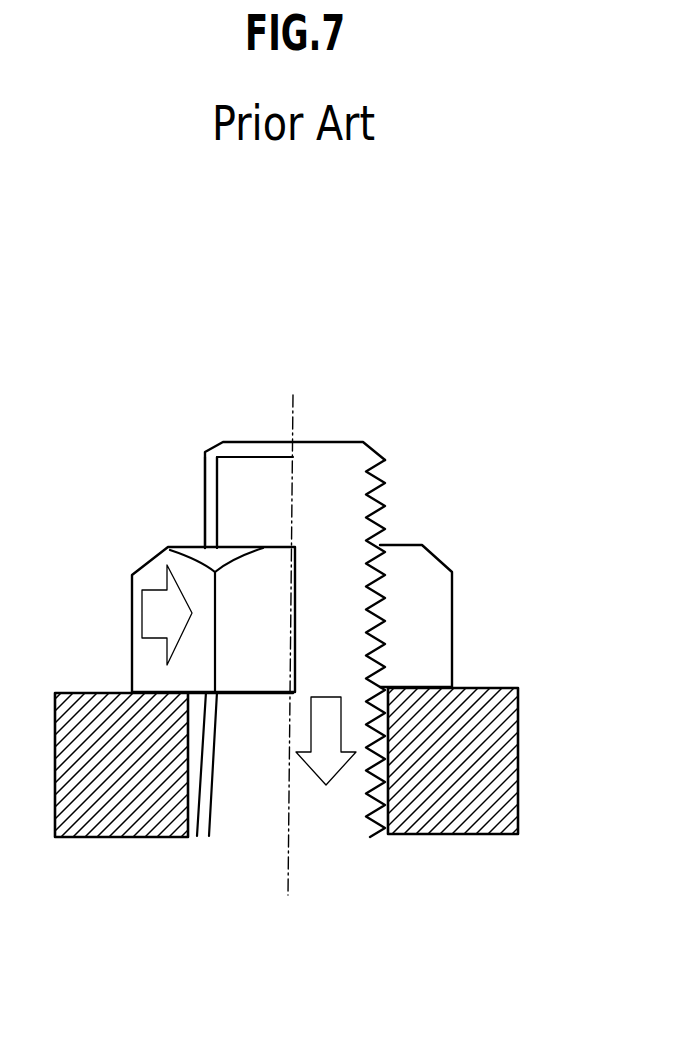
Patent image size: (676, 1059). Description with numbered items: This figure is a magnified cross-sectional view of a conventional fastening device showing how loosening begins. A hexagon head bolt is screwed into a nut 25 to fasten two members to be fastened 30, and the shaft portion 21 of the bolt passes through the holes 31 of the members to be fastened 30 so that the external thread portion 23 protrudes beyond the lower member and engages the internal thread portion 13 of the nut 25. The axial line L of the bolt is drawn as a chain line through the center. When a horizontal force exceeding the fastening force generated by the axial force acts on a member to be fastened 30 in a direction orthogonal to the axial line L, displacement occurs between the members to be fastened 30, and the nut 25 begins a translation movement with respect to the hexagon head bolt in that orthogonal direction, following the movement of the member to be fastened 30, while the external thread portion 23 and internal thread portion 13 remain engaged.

The axial line L is at (296, 426).
The external thread portion 23 is at (351, 441).
The shaft portion 21 is at (230, 818).
The nut 25 is at (152, 565).
The internal thread portion 13 is at (372, 571).
The hole 31 is at (385, 822).
The member to be fastened 30 is at (520, 762).